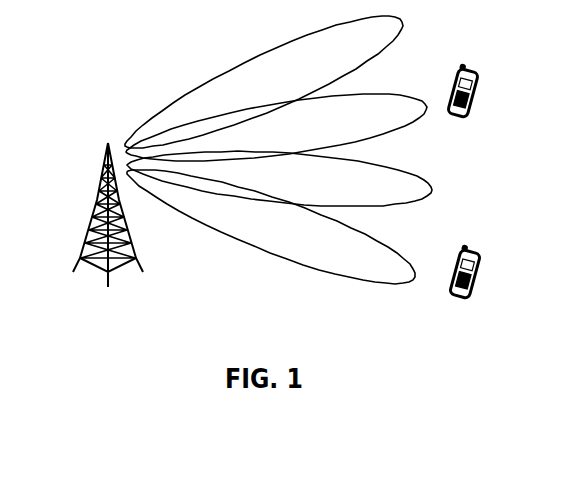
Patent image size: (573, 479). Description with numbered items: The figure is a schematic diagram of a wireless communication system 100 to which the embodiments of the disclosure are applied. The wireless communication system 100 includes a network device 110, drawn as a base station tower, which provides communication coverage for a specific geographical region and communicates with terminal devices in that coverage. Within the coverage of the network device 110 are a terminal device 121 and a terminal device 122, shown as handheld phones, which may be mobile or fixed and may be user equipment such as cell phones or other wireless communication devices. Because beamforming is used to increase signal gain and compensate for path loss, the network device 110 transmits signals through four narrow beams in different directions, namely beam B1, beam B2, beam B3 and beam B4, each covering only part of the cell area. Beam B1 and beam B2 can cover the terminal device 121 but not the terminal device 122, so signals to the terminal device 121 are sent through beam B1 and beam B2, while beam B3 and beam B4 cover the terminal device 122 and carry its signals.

The wireless communication system 100 is at (111, 38).
The network device 110 is at (94, 187).
The terminal device 121 is at (447, 86).
The terminal device 122 is at (447, 270).
The beam B1 is at (264, 82).
The beam B2 is at (276, 127).
The beam B3 is at (279, 178).
The beam B4 is at (271, 227).